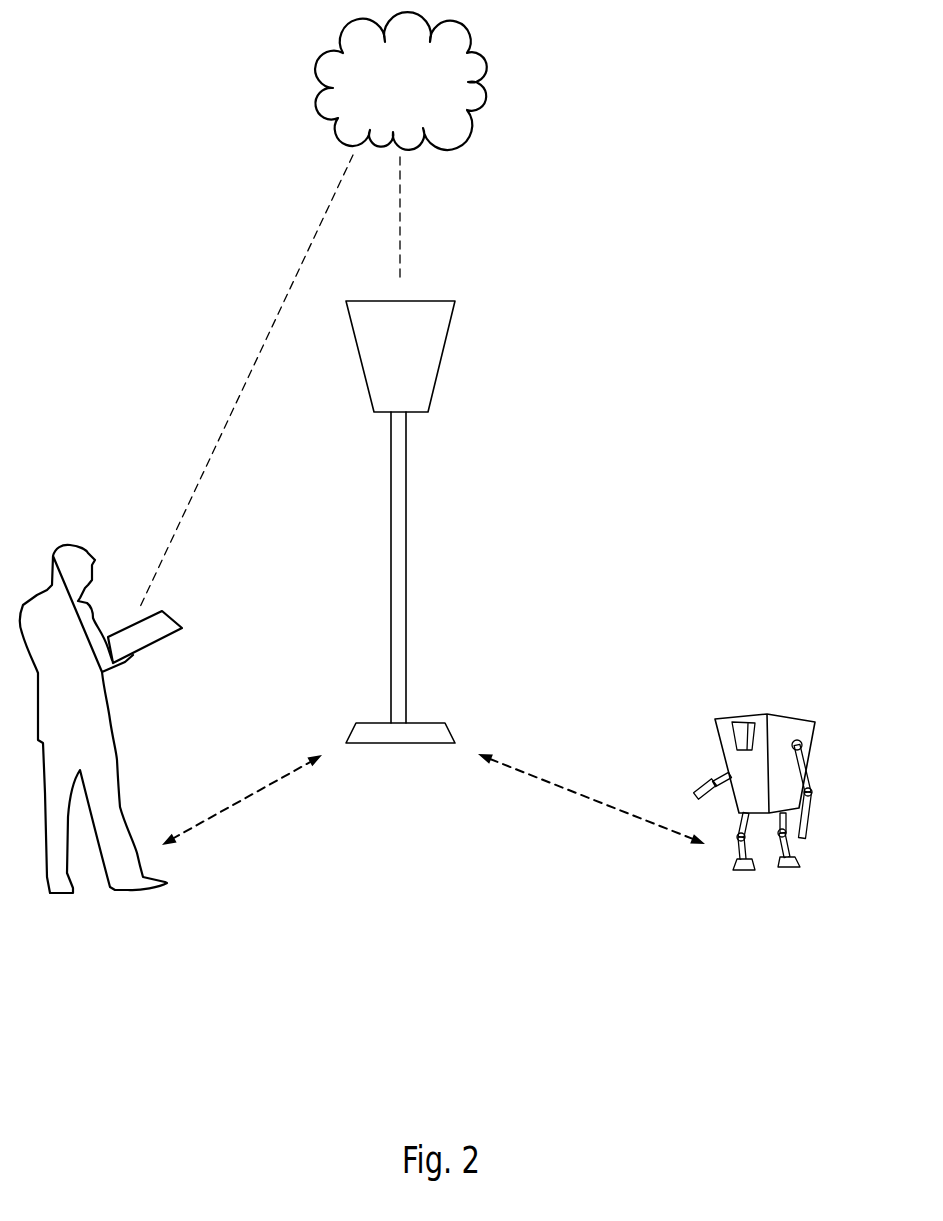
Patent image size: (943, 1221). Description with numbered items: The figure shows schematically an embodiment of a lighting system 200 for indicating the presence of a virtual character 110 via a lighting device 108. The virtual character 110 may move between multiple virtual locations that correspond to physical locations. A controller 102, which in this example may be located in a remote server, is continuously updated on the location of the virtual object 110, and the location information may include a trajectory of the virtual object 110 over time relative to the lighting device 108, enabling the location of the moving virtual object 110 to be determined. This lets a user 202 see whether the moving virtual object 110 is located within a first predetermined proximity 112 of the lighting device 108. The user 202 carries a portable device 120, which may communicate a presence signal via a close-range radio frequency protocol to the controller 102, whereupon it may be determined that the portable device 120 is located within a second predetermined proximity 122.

The controller 102 is at (343, 72).
The lighting device 108 is at (420, 345).
The virtual character 110 is at (782, 737).
The first predetermined proximity 112 is at (553, 780).
The portable device 120 is at (168, 615).
The second predetermined proximity 122 is at (248, 795).
The user 202 is at (73, 555).
The lighting system 200 is at (465, 1055).